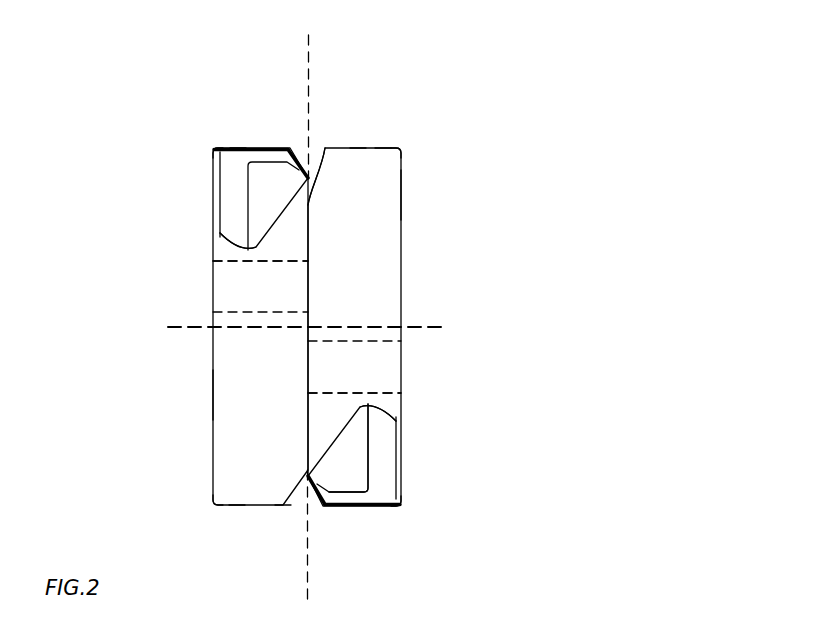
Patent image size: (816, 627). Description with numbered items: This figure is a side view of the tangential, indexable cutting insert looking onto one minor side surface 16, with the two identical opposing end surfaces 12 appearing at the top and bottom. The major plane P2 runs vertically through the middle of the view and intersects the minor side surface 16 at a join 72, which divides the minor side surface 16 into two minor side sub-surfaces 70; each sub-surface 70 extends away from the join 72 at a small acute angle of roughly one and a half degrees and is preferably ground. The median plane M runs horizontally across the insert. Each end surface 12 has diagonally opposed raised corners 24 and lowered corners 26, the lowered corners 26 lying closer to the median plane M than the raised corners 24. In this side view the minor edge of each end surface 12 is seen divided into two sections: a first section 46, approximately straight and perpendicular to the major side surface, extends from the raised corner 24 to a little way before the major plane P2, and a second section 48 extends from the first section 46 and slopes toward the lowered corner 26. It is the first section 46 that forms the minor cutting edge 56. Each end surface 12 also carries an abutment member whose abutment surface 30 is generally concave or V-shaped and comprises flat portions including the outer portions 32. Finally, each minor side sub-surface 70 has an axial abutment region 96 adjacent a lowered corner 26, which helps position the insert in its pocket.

The end surface 12 is at (297, 101).
The minor side surface 16 is at (386, 245).
The raised corner 24 is at (198, 142).
The lowered corner 26 is at (200, 234).
The abutment surface 30 is at (275, 170).
The outer portion 32 is at (355, 468).
The first section 46 is at (358, 147).
The second section 48 is at (283, 218).
The minor cutting edge 56 is at (237, 147).
The minor side sub-surface 70 is at (235, 393).
The join 72 is at (325, 148).
The axial abutment region 96 is at (240, 287).
The major plane P2 is at (311, 63).
The median plane M is at (440, 326).